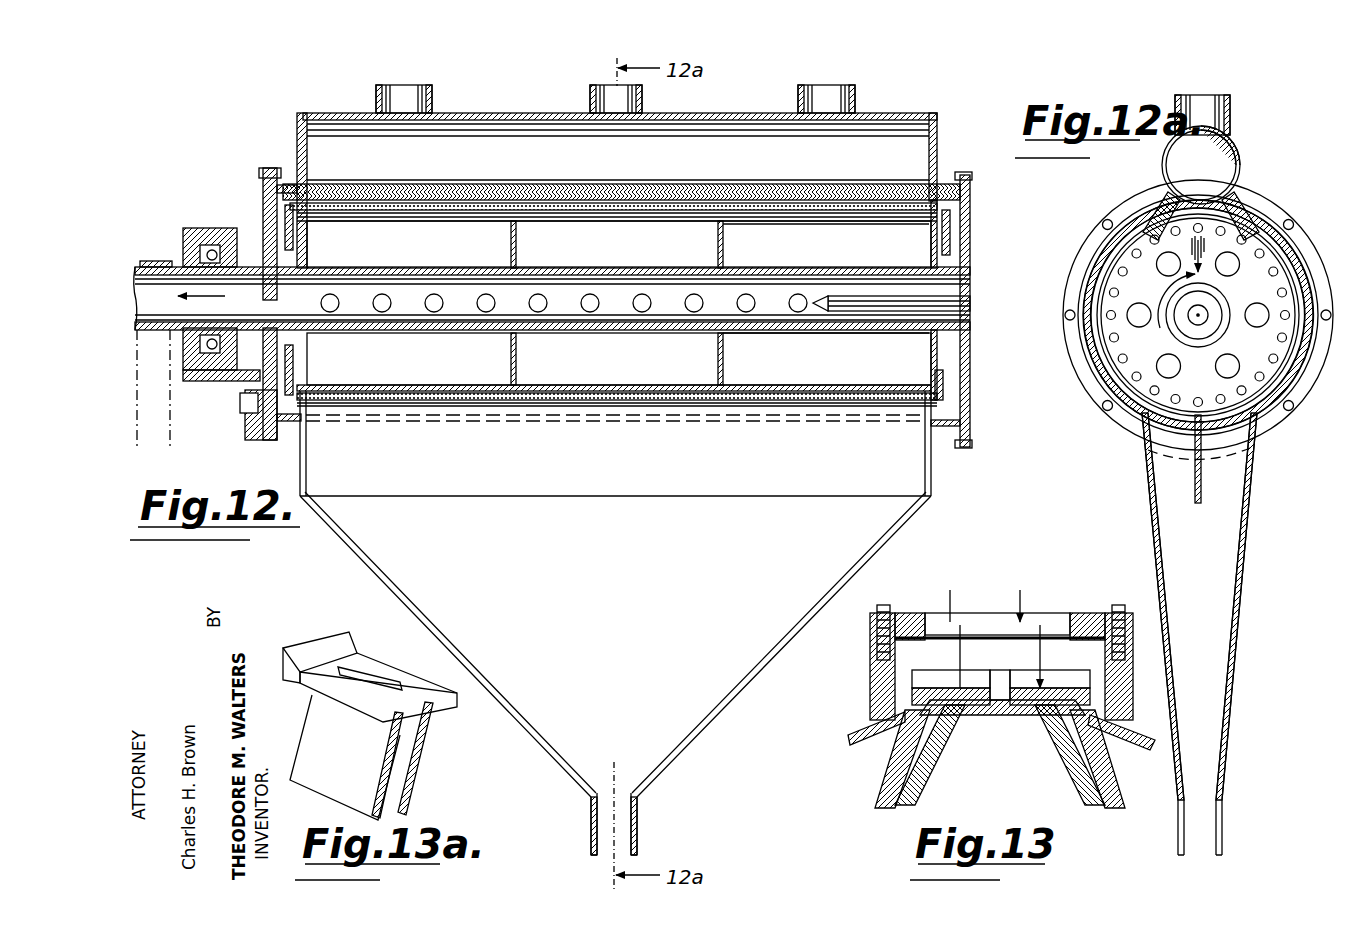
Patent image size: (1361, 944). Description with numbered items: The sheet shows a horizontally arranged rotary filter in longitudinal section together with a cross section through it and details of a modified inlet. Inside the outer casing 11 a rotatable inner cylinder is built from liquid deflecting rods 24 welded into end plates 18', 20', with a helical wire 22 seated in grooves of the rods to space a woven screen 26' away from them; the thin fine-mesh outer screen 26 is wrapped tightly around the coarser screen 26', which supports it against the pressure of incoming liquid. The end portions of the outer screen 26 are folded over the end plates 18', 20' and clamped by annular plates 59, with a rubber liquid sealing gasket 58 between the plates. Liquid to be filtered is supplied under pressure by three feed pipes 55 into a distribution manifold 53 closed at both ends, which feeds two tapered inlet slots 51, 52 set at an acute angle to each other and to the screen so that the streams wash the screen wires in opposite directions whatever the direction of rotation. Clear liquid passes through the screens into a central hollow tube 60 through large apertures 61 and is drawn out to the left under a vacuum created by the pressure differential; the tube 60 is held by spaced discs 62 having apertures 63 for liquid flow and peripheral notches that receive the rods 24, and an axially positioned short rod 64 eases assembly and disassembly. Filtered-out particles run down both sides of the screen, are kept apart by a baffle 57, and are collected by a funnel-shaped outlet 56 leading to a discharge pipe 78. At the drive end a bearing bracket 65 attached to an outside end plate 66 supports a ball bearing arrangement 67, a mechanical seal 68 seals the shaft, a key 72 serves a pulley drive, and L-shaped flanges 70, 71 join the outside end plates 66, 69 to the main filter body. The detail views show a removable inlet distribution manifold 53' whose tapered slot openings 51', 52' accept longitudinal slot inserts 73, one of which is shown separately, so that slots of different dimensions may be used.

In FIG. 12A, the outer casing 11 is at (1282, 265).
In FIG. 12, the end plate 18' is at (619, 244).
In FIG. 12, the end plate 20' is at (617, 369).
In FIG. 12A, the helical wire 22 is at (1158, 310).
In FIG. 12, the liquid deflecting rods 24 is at (850, 226).
In FIG. 12A, the liquid deflecting rods 24 is at (1280, 285).
In FIG. 12, the outer screen 26 is at (621, 183).
In FIG. 12A, the outer screen 26 is at (1171, 315).
In FIG. 12, the woven screen 26' is at (613, 227).
In FIG. 12A, the woven screen 26' is at (1171, 319).
In FIG. 12A, the slot 51 is at (1136, 209).
In FIG. 12A, the slot 52 is at (1256, 195).
In FIG. 12, the distribution manifold 53 is at (617, 288).
In FIG. 12A, the distribution manifold 53 is at (1201, 165).
In FIG. 12, the feed pipes 55 is at (376, 95).
In FIG. 12A, the feed pipes 55 is at (1230, 105).
In FIG. 12, the funnel-shaped outlet 56 is at (400, 590).
In FIG. 12A, the funnel-shaped outlet 56 is at (1240, 540).
In FIG. 12, the baffle 57 is at (642, 492).
In FIG. 12A, the baffle 57 is at (1201, 478).
In FIG. 12, the rubber liquid sealing gasket 58 is at (943, 355).
In FIG. 12, the annular plates 59 is at (950, 240).
In FIG. 12, the hollow tube 60 is at (640, 330).
In FIG. 12, the apertures 61 is at (385, 310).
In FIG. 12, the discs 62 is at (511, 233).
In FIG. 12, the apertures 63 is at (516, 244).
In FIG. 12A, the apertures 63 is at (1165, 270).
In FIG. 12, the short rod 64 is at (858, 305).
In FIG. 12, the bearing bracket 65 is at (215, 372).
In FIG. 12, the outside end plate 66 is at (268, 188).
In FIG. 12, the ball bearing arrangement 67 is at (200, 228).
In FIG. 12, the mechanical seal 68 is at (293, 352).
In FIG. 12, the outside end plate 69 is at (970, 272).
In FIG. 12, the L-shaped flange 70 is at (945, 445).
In FIG. 12, the L-shaped flange 71 is at (275, 172).
In FIG. 12, the key 72 is at (155, 262).
In FIG. 13, the slot inserts 73 is at (935, 690).
In FIG. 13A, the slot inserts 73 is at (378, 678).
In FIG. 12A, the discharge pipe 78 is at (1222, 824).
In FIG. 13, the removable inlet distribution manifold 53' is at (983, 670).
In FIG. 13, the tapered slot opening 51' is at (908, 773).
In FIG. 13, the tapered slot opening 52' is at (1082, 773).